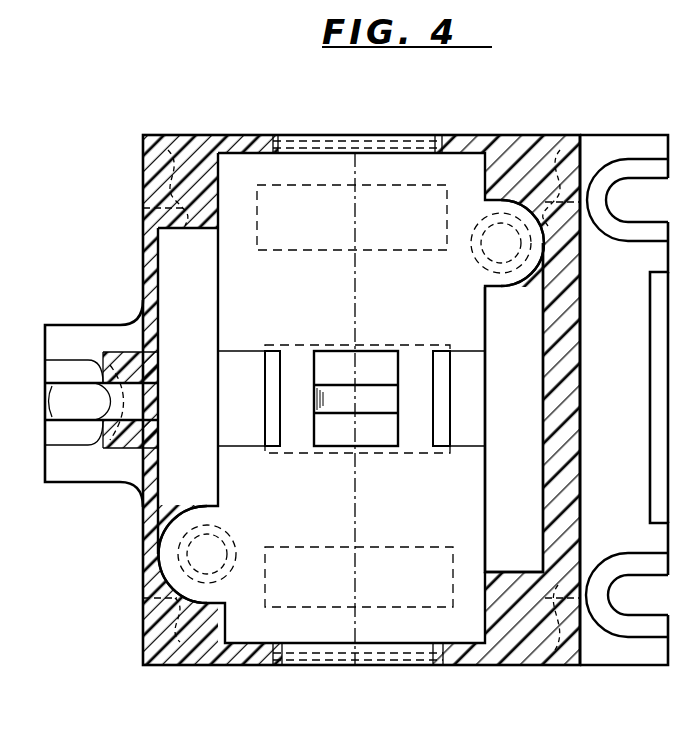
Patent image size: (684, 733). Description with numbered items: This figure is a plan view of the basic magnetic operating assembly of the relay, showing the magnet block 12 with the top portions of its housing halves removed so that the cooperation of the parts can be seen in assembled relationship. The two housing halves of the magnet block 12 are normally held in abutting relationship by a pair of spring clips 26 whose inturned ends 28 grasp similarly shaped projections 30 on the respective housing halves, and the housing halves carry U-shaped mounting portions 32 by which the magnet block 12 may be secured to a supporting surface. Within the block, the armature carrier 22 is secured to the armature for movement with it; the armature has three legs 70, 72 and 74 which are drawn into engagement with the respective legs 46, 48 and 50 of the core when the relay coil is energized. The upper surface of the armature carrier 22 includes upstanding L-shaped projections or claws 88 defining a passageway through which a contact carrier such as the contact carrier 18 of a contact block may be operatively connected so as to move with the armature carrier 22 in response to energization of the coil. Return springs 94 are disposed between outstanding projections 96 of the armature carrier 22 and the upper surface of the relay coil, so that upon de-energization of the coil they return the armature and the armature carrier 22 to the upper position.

The magnet block 12 is at (236, 130).
The contact carrier 18 is at (666, 374).
The armature carrier 22 is at (494, 468).
The spring clips 26 is at (240, 672).
The inturned ends 28 is at (580, 644).
The projections 30 is at (570, 128).
The U-shaped mounting portions 32 is at (640, 198).
The core leg 46 is at (349, 237).
The armature leg 70 is at (348, 253).
The core leg 48 is at (357, 380).
The armature leg 72 is at (448, 322).
The core leg 50 is at (359, 555).
The armature leg 74 is at (452, 516).
The L-shaped projections or claws 88 is at (333, 350).
The return springs 94 is at (478, 262).
The outstanding projections 96 is at (513, 288).